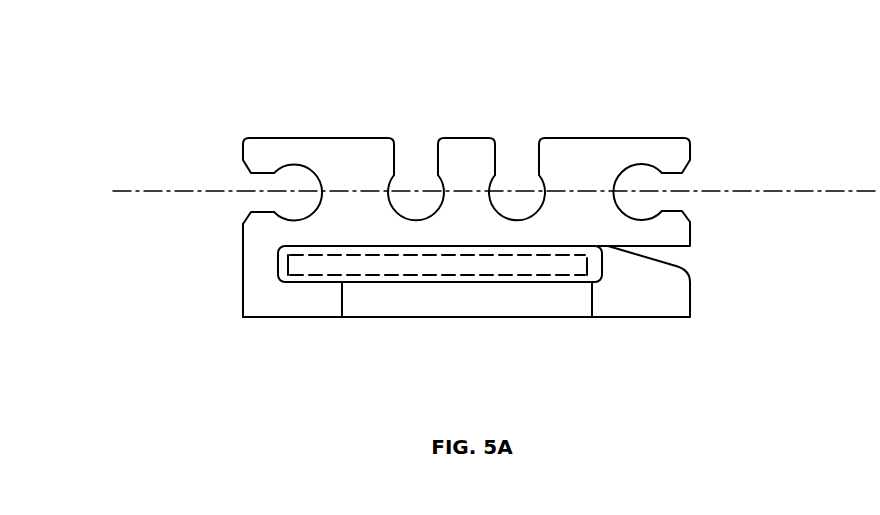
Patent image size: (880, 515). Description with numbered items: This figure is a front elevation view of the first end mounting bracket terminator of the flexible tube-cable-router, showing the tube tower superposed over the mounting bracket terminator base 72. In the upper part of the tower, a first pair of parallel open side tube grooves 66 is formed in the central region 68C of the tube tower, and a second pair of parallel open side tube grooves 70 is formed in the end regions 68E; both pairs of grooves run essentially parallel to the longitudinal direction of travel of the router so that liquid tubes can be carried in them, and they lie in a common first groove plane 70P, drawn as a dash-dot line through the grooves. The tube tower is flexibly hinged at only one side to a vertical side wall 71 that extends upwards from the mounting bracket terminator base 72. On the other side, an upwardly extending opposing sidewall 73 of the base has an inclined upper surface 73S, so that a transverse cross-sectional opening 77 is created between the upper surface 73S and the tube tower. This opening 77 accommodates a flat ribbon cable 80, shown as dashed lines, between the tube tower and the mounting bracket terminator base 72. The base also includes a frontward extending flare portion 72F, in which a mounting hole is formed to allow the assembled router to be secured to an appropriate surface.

The open side tube grooves 66 is at (413, 182).
The central region 68C is at (472, 117).
The end regions 68E is at (300, 120).
The open side tube grooves 70 is at (277, 184).
The first groove plane 70P is at (465, 190).
The vertical side wall 71 is at (243, 260).
The mounting bracket terminator base 72 is at (285, 320).
The frontward extending flare portion 72F is at (532, 310).
The opposing sidewall 73 is at (676, 332).
The inclined upper surface 73S is at (668, 262).
The transverse cross-sectional opening 77 is at (473, 263).
The flat ribbon cable 80 is at (453, 267).